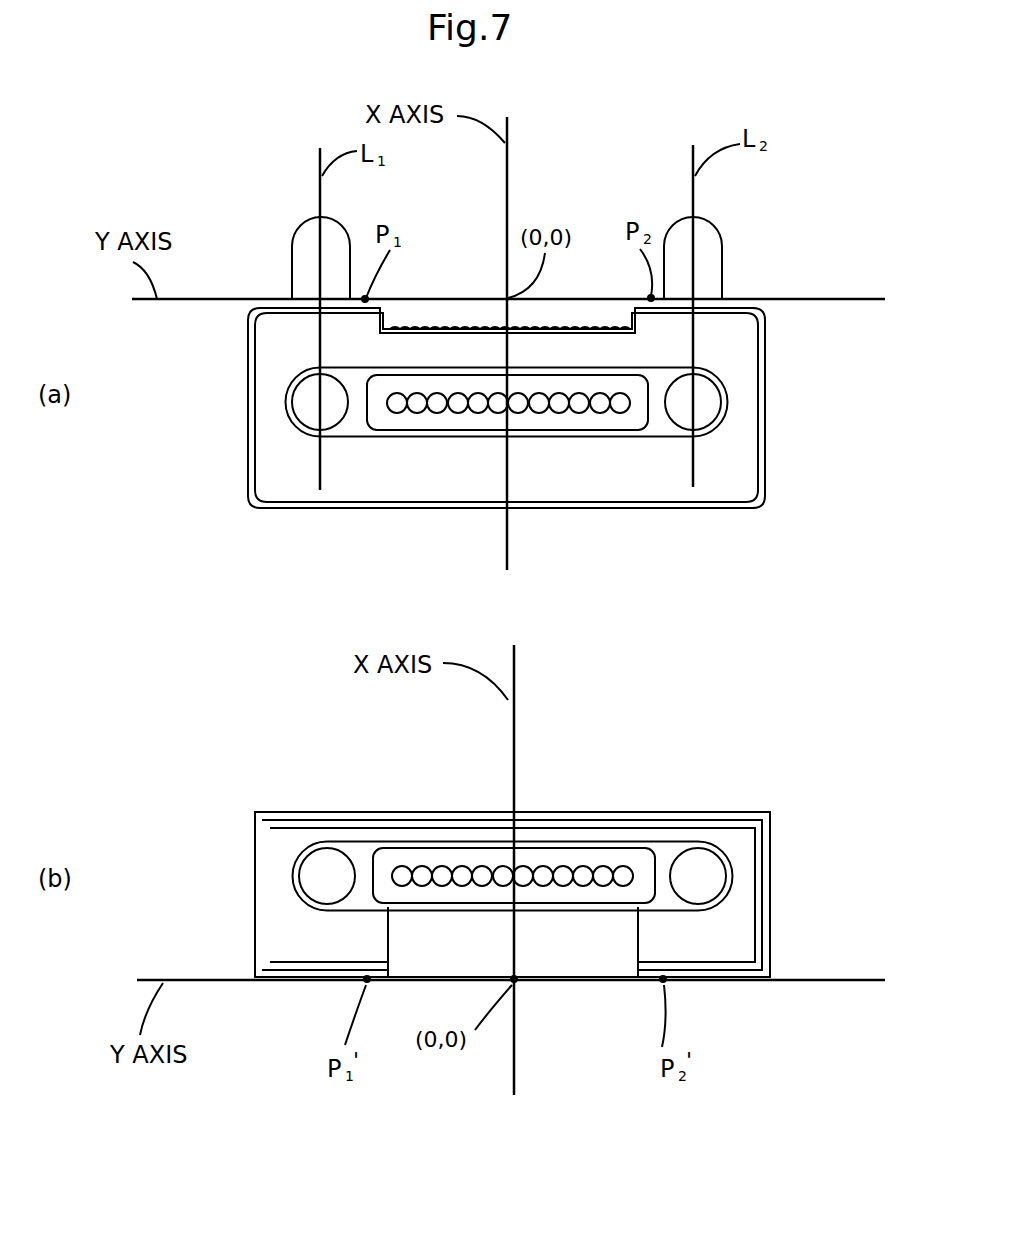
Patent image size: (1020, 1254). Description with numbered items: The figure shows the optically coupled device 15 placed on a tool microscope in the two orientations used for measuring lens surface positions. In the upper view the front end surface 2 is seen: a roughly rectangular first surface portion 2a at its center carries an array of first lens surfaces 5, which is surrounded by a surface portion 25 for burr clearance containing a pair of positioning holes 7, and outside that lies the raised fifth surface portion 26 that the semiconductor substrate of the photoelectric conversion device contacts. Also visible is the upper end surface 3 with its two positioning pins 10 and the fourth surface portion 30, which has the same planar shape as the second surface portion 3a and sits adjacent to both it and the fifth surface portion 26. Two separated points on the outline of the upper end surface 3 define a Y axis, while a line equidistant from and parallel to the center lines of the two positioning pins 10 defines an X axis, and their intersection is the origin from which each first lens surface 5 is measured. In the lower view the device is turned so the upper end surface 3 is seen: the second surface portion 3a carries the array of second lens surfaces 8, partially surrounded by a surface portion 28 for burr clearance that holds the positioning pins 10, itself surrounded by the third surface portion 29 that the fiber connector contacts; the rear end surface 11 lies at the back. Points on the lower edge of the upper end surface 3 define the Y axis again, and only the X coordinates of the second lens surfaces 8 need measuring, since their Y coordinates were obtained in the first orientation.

The optically coupled device 15 is at (230, 197).
The front end surface 2 is at (280, 370).
The first surface portion 2a is at (424, 438).
The upper end surface 3 is at (738, 297).
The second surface portion 3a is at (425, 848).
The first lens surfaces 5 is at (620, 413).
The positioning holes 7 is at (305, 420).
The second lens surfaces 8 is at (457, 330).
The positioning pins 10 is at (292, 270).
The rear end surface 11 is at (648, 812).
The surface portion for burr clearance 25 is at (460, 440).
The fifth surface portion 26 is at (275, 430).
The surface portion for burr clearance 28 is at (363, 842).
The third surface portion 29 is at (292, 925).
The fourth surface portion 30 is at (627, 296).